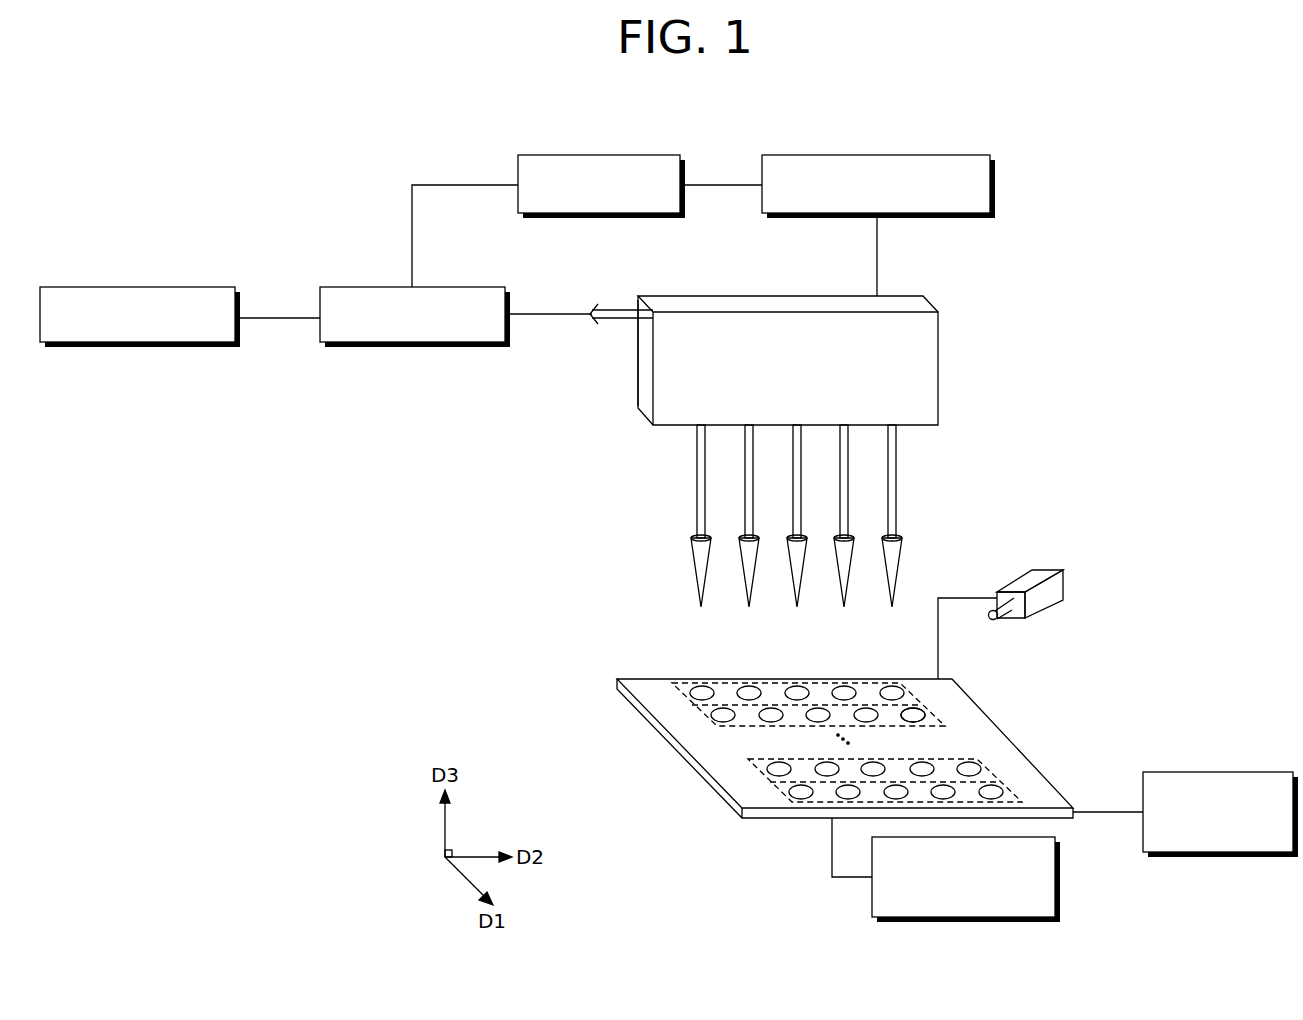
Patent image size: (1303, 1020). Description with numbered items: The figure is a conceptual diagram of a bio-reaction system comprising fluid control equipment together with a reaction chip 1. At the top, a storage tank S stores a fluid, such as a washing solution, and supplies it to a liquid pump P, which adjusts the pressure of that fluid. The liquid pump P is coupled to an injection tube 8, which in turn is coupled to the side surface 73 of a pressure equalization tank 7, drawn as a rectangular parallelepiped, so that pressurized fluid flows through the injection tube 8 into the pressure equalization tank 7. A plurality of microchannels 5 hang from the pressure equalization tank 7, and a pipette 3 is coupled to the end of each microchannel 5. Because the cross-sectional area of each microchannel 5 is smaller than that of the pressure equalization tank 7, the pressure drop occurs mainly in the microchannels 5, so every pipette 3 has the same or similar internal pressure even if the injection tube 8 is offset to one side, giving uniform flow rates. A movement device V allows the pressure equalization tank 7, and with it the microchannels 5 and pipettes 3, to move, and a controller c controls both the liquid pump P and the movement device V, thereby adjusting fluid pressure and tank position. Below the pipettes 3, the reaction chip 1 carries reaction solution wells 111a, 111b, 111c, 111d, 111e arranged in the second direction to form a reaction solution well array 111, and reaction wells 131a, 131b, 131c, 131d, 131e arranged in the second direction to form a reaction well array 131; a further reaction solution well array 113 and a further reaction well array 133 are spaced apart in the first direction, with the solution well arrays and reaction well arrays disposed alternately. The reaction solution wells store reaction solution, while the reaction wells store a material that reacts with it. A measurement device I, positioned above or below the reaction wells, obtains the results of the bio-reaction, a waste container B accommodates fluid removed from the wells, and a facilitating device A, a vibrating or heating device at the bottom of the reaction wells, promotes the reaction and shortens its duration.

The storage tank S is at (205, 287).
The liquid pump P is at (467, 287).
The controller c is at (645, 155).
The movement device V is at (948, 155).
The pressure equalization tank 7 is at (940, 352).
The side surface 73 is at (646, 388).
The injection tube 8 is at (620, 310).
The microchannel 5 is at (897, 473).
The pipette 3 is at (900, 555).
The measurement device I is at (1048, 571).
The reaction chip 1 is at (624, 666).
The reaction solution well array 111 is at (920, 700).
The reaction solution well 111a is at (700, 686).
The reaction solution well 111b is at (749, 686).
The reaction solution well 111c is at (797, 686).
The reaction solution well 111d is at (845, 686).
The reaction solution well 111e is at (892, 686).
The reaction well array 131 is at (930, 724).
The reaction well 131a is at (712, 712).
The reaction well 131b is at (762, 716).
The reaction well 131c is at (810, 716).
The reaction well 131d is at (858, 720).
The reaction well 131e is at (925, 718).
The reaction solution well array 113 is at (988, 770).
The reaction well array 133 is at (1008, 797).
The waste container B is at (1256, 772).
The facilitating device A is at (1058, 886).